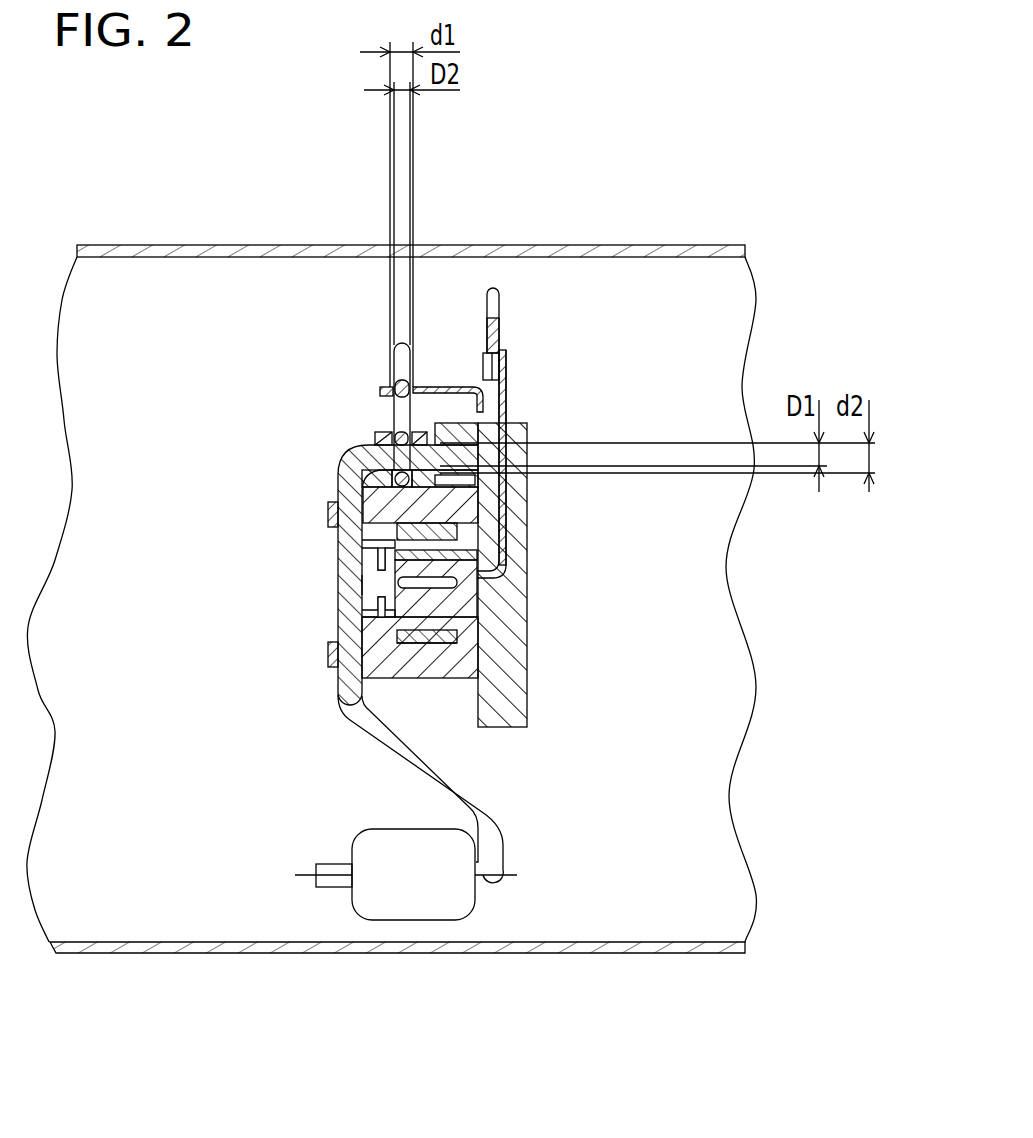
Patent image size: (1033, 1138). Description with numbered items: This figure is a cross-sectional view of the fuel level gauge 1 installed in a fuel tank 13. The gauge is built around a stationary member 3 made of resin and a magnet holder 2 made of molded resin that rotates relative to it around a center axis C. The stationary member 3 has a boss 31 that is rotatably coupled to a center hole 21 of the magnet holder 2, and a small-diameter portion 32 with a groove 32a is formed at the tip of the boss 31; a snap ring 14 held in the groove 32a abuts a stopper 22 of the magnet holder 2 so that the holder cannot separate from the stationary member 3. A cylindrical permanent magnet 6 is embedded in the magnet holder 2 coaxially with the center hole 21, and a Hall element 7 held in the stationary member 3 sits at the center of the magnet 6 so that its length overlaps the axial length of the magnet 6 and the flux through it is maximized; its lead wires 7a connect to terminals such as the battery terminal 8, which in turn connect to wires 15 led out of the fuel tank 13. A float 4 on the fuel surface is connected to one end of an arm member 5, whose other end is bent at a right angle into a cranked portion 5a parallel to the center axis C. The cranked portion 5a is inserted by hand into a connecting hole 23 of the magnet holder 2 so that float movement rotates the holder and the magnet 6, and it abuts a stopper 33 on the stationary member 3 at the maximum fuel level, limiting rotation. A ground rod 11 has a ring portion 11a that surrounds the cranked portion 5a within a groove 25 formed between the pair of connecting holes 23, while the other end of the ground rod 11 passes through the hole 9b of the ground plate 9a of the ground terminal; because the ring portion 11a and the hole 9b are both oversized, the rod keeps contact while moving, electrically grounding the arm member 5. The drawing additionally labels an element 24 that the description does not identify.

The fuel level gauge 1 is at (362, 435).
The magnet holder 2 is at (427, 678).
The stationary member 3 is at (517, 423).
The float 4 is at (477, 915).
The arm member 5 is at (508, 840).
The cranked portion 5a is at (478, 387).
The permanent magnet 6 is at (480, 678).
The Hall element 7 is at (477, 660).
The lead wires 7a is at (455, 640).
The battery terminal 8 is at (506, 357).
The ground plate 9a is at (383, 383).
The hole 9b is at (390, 417).
The ground rod 11 is at (410, 347).
The ring portion 11a is at (448, 423).
The fuel tank 13 is at (107, 245).
The snap ring 14 is at (365, 620).
The wires 15 is at (500, 307).
The center hole 21 is at (490, 567).
The stopper 22 is at (490, 588).
The connecting hole 23 is at (350, 456).
The flange portion 24 is at (327, 512).
The groove 25 is at (380, 490).
The boss 31 is at (527, 528).
The small-diameter portion 32 is at (390, 617).
The groove 32a is at (378, 563).
The stopper 33 is at (527, 497).
The center axis C is at (397, 583).